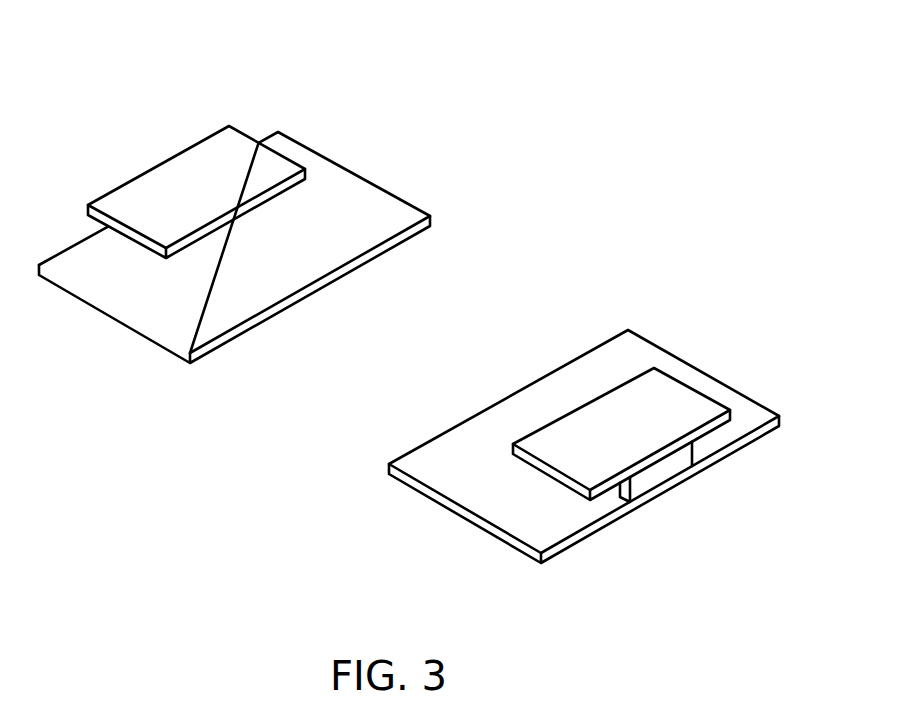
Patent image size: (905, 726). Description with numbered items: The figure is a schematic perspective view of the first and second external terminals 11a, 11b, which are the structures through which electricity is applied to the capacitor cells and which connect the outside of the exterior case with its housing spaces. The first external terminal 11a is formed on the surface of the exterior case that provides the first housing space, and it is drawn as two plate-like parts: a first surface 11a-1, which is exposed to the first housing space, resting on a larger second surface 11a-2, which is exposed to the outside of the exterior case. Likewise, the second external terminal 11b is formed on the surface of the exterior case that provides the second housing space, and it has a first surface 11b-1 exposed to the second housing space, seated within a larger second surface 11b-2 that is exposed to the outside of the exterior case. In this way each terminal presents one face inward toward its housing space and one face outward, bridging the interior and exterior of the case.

The first external terminal 11a is at (163, 38).
The first surface 11a-1 is at (145, 189).
The second surface 11a-2 is at (137, 326).
The second external terminal 11b is at (827, 352).
The first surface 11b-1 is at (660, 392).
The second surface 11b-2 is at (470, 513).